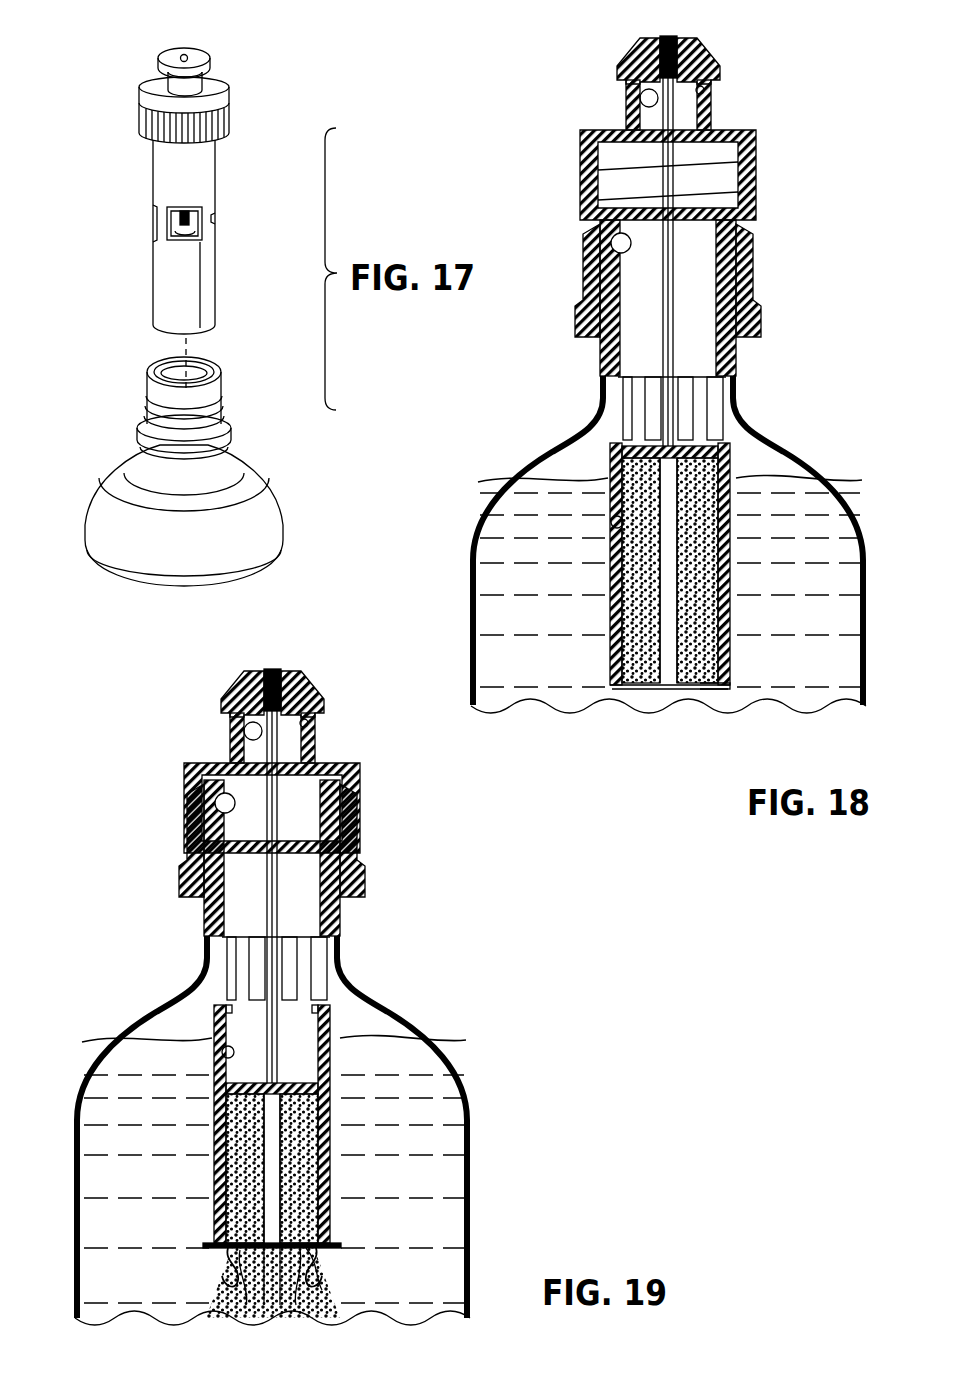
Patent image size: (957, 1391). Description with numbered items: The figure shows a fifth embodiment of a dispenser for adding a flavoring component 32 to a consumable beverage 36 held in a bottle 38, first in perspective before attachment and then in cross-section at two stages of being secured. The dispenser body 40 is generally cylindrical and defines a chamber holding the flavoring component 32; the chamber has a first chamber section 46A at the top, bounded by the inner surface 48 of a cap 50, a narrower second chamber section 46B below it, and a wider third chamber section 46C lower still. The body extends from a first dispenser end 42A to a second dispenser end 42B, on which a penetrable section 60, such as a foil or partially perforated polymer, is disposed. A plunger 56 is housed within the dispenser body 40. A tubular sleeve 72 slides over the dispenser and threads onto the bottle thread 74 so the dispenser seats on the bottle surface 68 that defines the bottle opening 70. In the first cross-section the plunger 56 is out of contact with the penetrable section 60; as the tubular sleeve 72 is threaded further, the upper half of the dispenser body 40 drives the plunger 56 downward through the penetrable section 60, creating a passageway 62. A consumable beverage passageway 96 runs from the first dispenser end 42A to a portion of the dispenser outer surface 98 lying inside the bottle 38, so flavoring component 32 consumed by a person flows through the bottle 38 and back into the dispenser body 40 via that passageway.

In FIG. 18, the flavoring component 32 is at (640, 583).
In FIG. 19, the flavoring component 32 is at (240, 1143).
In FIG. 18, the consumable beverage 36 is at (553, 674).
In FIG. 19, the consumable beverage 36 is at (155, 1234).
In FIG. 17, the bottle 38 is at (207, 551).
In FIG. 18, the bottle 38 is at (823, 458).
In FIG. 19, the bottle 38 is at (432, 1018).
In FIG. 17, the dispenser body 40 is at (163, 174).
In FIG. 18, the dispenser body 40 is at (737, 267).
In FIG. 19, the dispenser body 40 is at (327, 832).
In FIG. 18, the first dispenser end 42A is at (714, 90).
In FIG. 19, the first dispenser end 42A is at (320, 723).
In FIG. 18, the second dispenser end 42B is at (717, 689).
In FIG. 19, the second dispenser end 42B is at (316, 1249).
In FIG. 18, the first chamber section 46A is at (640, 88).
In FIG. 19, the first chamber section 46A is at (244, 721).
In FIG. 18, the second chamber section 46B is at (612, 235).
In FIG. 19, the second chamber section 46B is at (192, 791).
In FIG. 18, the third chamber section 46C is at (612, 518).
In FIG. 19, the third chamber section 46C is at (222, 1048).
In FIG. 18, the inner surface 48 is at (624, 83).
In FIG. 19, the inner surface 48 is at (227, 716).
In FIG. 17, the cap 50 is at (202, 62).
In FIG. 18, the cap 50 is at (690, 42).
In FIG. 19, the cap 50 is at (294, 674).
In FIG. 18, the plunger 56 is at (666, 287).
In FIG. 19, the plunger 56 is at (270, 870).
In FIG. 18, the penetrable section 60 is at (633, 686).
In FIG. 19, the penetrable section 60 is at (233, 1247).
In FIG. 19, the passageway 62 is at (246, 1274).
In FIG. 17, the bottle surface 68 is at (150, 363).
In FIG. 17, the bottle opening 70 is at (201, 369).
In FIG. 17, the tubular sleeve 72 is at (232, 108).
In FIG. 18, the tubular sleeve 72 is at (757, 149).
In FIG. 19, the tubular sleeve 72 is at (360, 779).
In FIG. 17, the bottle thread 74 is at (223, 387).
In FIG. 17, the consumable beverage passageway 96 is at (212, 213).
In FIG. 18, the consumable beverage passageway 96 is at (717, 407).
In FIG. 19, the consumable beverage passageway 96 is at (320, 967).
In FIG. 18, the dispenser outer surface 98 is at (732, 428).
In FIG. 19, the dispenser outer surface 98 is at (330, 1002).